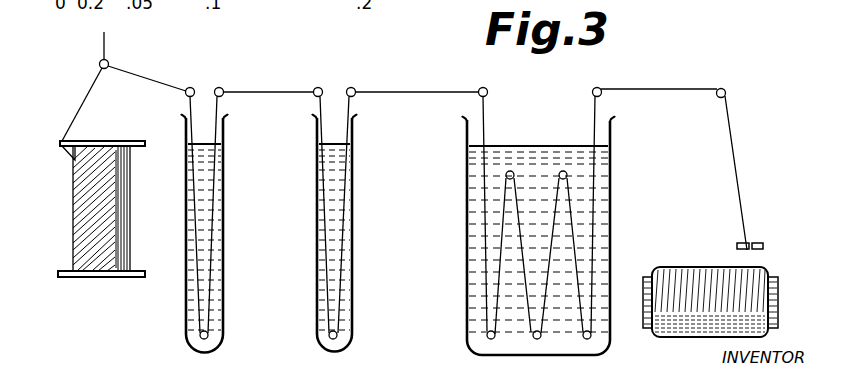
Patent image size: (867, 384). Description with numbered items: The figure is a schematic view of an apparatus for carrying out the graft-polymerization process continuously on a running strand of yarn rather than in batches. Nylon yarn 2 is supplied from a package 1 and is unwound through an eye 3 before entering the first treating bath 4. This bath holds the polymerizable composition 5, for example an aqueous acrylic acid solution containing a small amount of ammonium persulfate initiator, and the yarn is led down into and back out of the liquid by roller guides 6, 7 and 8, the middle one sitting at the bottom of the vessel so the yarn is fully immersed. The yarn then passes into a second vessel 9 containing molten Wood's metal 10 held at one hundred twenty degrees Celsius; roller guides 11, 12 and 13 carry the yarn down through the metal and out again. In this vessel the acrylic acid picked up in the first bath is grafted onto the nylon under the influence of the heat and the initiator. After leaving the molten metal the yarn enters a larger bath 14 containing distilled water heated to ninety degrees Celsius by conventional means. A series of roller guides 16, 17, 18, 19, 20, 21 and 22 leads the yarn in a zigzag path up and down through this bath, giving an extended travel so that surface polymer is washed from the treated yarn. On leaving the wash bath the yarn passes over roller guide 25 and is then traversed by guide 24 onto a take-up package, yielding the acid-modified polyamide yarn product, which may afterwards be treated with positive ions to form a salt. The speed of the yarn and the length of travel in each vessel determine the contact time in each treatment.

The package 1 is at (72, 212).
The nylon yarn 2 is at (82, 104).
The eye 3 is at (99, 64).
The treating bath 4 is at (224, 228).
The polymerizable composition 5 is at (207, 186).
The roller guide 6 is at (191, 87).
The roller guide 7 is at (209, 335).
The roller guide 8 is at (222, 88).
The vessel 9 is at (353, 180).
The molten Wood's metal 10 is at (336, 232).
The roller guide 11 is at (315, 88).
The roller guide 12 is at (329, 336).
The roller guide 13 is at (354, 88).
The bath 14 is at (466, 252).
The roller guide 16 is at (488, 89).
The roller guide 17 is at (486, 336).
The roller guide 18 is at (505, 175).
The roller guide 19 is at (534, 339).
The roller guide 20 is at (568, 175).
The roller guide 21 is at (591, 331).
The roller guide 22 is at (595, 87).
The guide 24 is at (764, 246).
The roller guide 25 is at (726, 92).